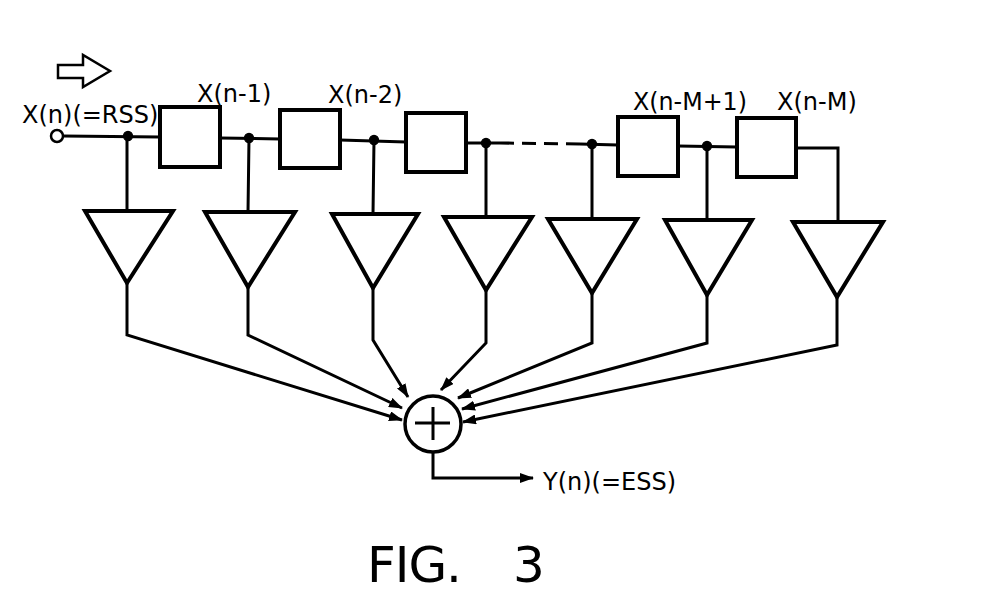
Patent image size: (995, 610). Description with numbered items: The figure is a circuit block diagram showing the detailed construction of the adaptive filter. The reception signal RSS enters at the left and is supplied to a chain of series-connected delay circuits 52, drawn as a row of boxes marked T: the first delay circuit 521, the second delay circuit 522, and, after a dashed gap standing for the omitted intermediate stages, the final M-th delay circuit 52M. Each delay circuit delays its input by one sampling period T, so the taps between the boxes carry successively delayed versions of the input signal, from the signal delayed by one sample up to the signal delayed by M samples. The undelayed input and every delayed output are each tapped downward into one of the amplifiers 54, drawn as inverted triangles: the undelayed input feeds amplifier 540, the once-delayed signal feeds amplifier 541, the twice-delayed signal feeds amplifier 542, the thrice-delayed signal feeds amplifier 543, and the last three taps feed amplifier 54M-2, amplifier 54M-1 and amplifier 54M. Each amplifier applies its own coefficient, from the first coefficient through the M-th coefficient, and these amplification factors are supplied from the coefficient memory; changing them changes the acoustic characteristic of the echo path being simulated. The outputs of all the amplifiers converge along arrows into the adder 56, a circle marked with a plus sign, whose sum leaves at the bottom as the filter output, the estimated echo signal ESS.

The delay circuits 52 is at (528, 99).
The first delay circuit 521 is at (183, 107).
The second delay circuit 522 is at (313, 110).
The M-th delay circuit 52M is at (798, 130).
The amplifiers 54 is at (497, 279).
The amplifier h0 540 is at (147, 257).
The amplifier h1 541 is at (270, 258).
The amplifier h2 542 is at (398, 258).
The amplifier h3 543 is at (510, 260).
The amplifier hM-2 54M-2 is at (612, 262).
The amplifier hM-1 54M-1 is at (728, 263).
The amplifier hM 54M is at (858, 265).
The adder 56 is at (406, 443).